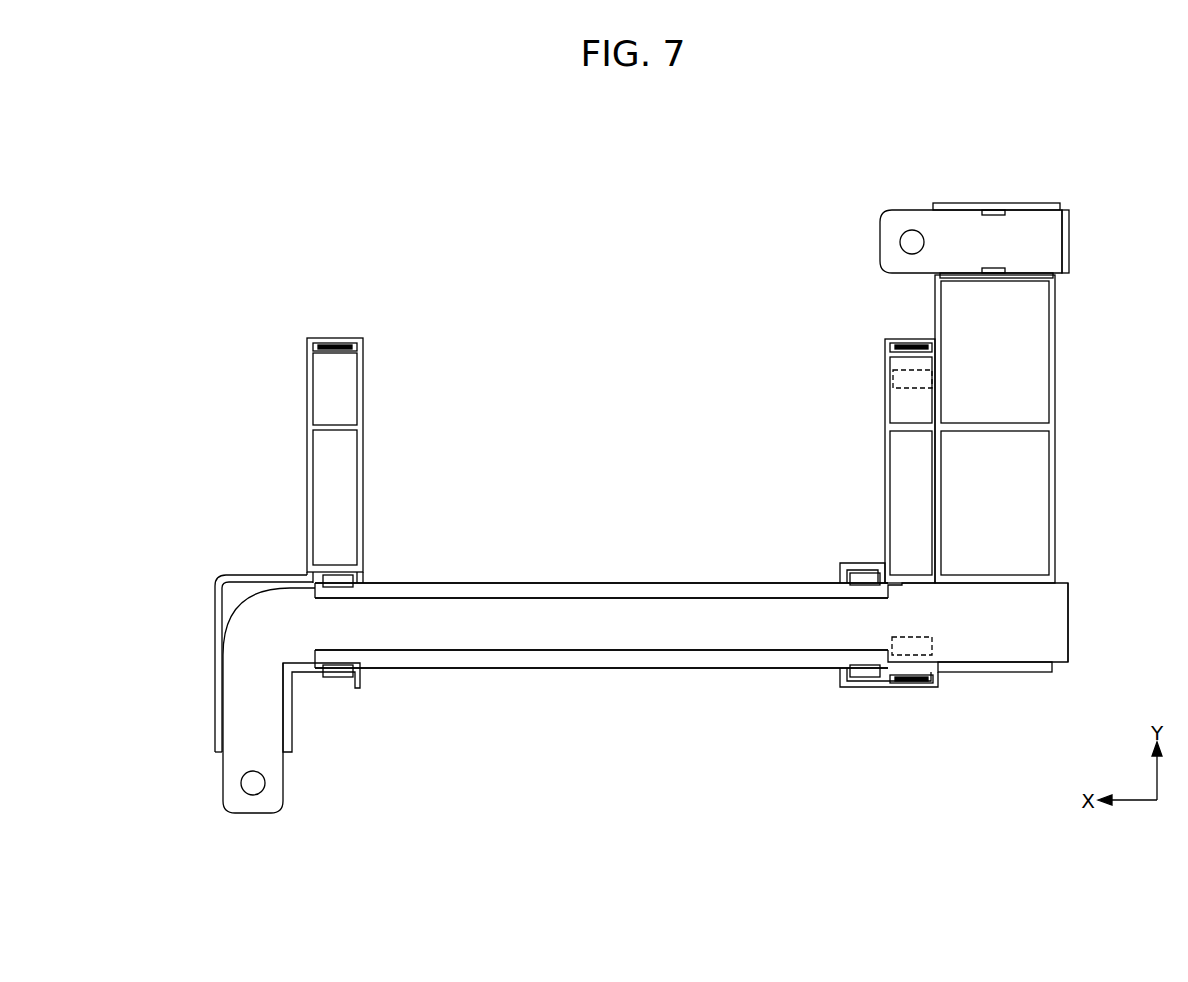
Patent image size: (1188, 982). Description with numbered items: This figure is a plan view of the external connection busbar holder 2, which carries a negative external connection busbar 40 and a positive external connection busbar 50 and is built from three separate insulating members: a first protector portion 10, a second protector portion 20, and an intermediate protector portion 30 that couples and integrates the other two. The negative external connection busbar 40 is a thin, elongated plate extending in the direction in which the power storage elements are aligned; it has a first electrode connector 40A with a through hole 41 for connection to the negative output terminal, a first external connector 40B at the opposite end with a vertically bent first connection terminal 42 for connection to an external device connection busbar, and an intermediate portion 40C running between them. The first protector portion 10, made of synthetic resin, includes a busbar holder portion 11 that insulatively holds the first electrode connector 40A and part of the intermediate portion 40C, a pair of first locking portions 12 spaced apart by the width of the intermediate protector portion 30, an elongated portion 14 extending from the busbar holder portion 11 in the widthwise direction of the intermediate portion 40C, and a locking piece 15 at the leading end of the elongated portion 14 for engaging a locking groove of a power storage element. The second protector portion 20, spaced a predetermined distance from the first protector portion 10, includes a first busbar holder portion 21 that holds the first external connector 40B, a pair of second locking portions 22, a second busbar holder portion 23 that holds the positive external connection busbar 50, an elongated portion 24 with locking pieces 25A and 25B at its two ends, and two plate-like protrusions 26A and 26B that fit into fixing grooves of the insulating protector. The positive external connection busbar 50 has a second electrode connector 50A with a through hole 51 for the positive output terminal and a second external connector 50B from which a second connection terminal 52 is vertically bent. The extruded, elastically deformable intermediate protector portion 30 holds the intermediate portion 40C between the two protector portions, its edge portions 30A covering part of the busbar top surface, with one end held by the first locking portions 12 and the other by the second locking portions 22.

The external connection busbar holder 2 is at (706, 810).
The first protector portion 10 is at (286, 519).
The busbar holder portion 11 is at (215, 683).
The first locking portions 12 is at (345, 578).
The elongated portion 14 is at (363, 402).
The locking piece 15 is at (342, 346).
The second protector portion 20 is at (1068, 392).
The first busbar holder portion 21 is at (1018, 674).
The second locking portions 22 is at (862, 575).
The second busbar holder portion 23 is at (1026, 205).
The elongated portion 24 is at (885, 413).
The locking piece 25A is at (908, 343).
The locking piece 25B is at (917, 683).
The protrusion 26A is at (900, 380).
The protrusion 26B is at (925, 643).
The intermediate protector portion 30 is at (635, 676).
The edge portions 30A is at (555, 587).
The negative external connection busbar 40 is at (250, 595).
The first electrode connector 40A is at (235, 772).
The first external connector 40B is at (1030, 640).
The intermediate portion 40C is at (647, 608).
The through hole 41 is at (258, 788).
The first connection terminal 42 is at (1070, 598).
The positive external connection busbar 50 is at (903, 203).
The second electrode connector 50A is at (887, 222).
The second external connector 50B is at (1058, 233).
The through hole 51 is at (905, 248).
The second connection terminal 52 is at (1070, 228).